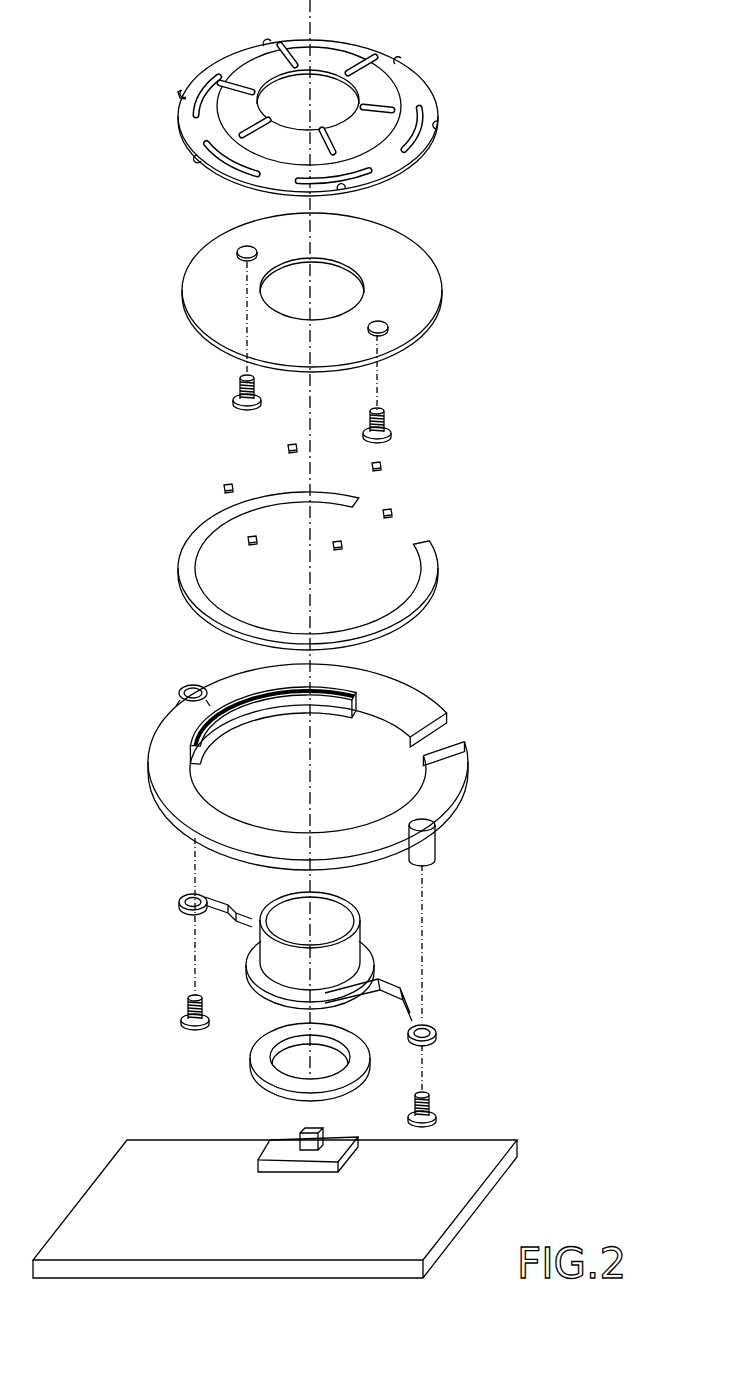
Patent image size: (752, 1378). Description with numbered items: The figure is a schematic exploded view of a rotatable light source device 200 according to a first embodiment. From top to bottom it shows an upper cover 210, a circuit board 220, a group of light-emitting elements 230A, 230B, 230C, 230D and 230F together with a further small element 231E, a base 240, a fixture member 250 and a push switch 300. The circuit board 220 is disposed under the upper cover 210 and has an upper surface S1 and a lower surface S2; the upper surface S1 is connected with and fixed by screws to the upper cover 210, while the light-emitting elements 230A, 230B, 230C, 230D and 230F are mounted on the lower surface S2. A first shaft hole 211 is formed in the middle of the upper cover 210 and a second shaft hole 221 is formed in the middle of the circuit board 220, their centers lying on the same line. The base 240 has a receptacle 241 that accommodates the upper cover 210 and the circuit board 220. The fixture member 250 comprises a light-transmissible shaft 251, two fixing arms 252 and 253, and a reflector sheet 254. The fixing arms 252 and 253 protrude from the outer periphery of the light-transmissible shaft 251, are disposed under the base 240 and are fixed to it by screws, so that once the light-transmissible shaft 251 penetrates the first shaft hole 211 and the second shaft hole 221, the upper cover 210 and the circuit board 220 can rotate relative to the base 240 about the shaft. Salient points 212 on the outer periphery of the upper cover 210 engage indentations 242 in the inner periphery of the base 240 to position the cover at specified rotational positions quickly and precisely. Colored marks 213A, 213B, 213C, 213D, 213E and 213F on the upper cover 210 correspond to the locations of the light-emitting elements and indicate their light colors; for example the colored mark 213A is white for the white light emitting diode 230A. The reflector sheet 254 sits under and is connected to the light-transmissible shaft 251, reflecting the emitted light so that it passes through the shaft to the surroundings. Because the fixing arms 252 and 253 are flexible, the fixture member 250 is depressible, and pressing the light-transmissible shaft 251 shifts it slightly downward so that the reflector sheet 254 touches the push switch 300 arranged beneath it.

The rotatable light source device 200 is at (602, 18).
The upper cover 210 is at (316, 104).
The first shaft hole 211 is at (318, 82).
The salient points 212 is at (185, 97).
The colored mark 213A is at (238, 80).
The colored mark 213B is at (240, 127).
The colored mark 213C is at (330, 137).
The colored mark 213D is at (395, 108).
The colored mark 213E is at (347, 70).
The colored mark 213F is at (288, 53).
The circuit board 220 is at (342, 293).
The second shaft hole 221 is at (330, 282).
The upper surface S1 is at (202, 275).
The lower surface S2 is at (387, 352).
The light-emitting element 230A is at (223, 498).
The light-emitting element 230B is at (250, 547).
The light-emitting element 230C is at (340, 550).
The light-emitting element 230D is at (393, 517).
The light-emitting element 230F is at (283, 448).
The sensor piece 231E is at (383, 462).
The base 240 is at (295, 756).
The receptacle 241 is at (270, 767).
The indentations 242 is at (273, 688).
The fixture member 250 is at (306, 984).
The light-transmissible shaft 251 is at (282, 963).
The fixing arm 252 is at (217, 905).
The fixing arm 253 is at (385, 990).
The reflector sheet 254 is at (260, 1062).
The push switch 300 is at (288, 1140).